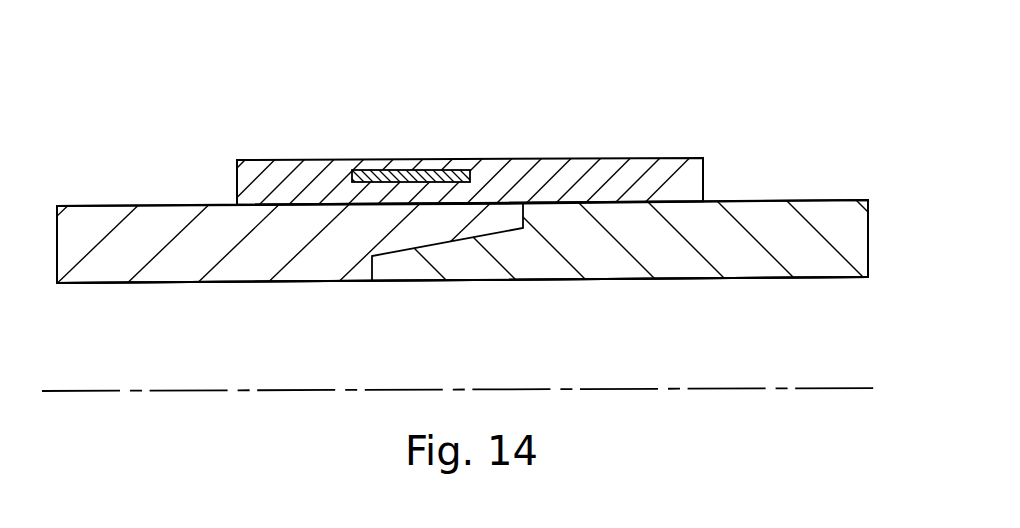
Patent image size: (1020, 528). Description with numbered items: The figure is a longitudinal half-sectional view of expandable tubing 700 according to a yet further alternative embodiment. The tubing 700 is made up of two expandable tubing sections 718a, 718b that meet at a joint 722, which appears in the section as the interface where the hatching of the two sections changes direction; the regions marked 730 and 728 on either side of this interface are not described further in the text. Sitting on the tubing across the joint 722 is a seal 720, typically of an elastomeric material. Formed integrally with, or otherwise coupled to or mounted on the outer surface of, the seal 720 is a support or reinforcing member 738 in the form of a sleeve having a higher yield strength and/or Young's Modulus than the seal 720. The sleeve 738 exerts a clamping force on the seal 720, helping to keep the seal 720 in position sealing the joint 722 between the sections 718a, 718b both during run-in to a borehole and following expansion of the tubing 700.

The expandable tubing 700 is at (740, 108).
The seal 720 is at (569, 130).
The support or reinforcing member 738 is at (399, 170).
The expandable tubing section 718a is at (697, 278).
The expandable tubing section 718b is at (135, 283).
The wedge portion 728 is at (555, 278).
The base portion 730 is at (300, 283).
The joint 722 is at (430, 308).